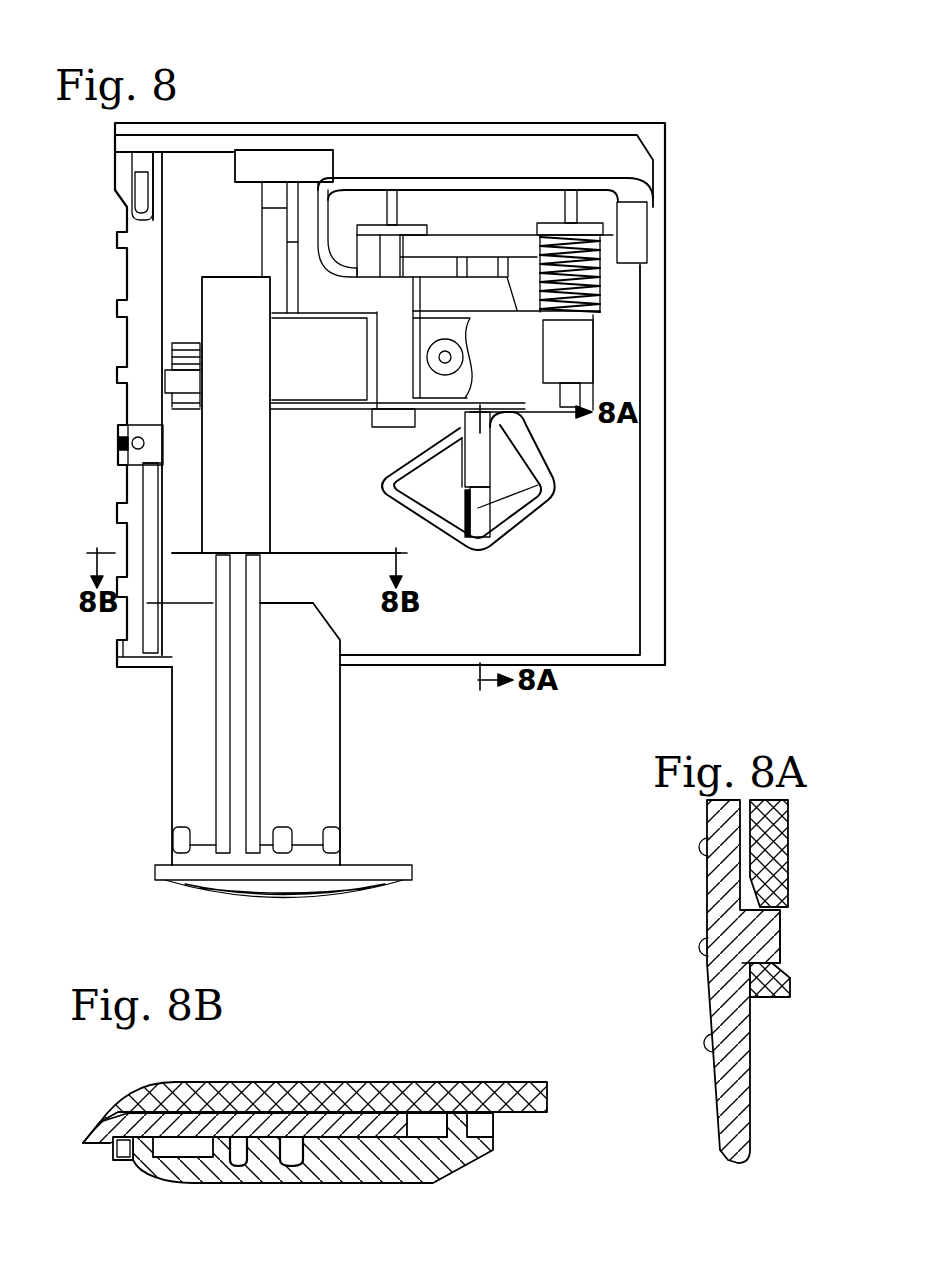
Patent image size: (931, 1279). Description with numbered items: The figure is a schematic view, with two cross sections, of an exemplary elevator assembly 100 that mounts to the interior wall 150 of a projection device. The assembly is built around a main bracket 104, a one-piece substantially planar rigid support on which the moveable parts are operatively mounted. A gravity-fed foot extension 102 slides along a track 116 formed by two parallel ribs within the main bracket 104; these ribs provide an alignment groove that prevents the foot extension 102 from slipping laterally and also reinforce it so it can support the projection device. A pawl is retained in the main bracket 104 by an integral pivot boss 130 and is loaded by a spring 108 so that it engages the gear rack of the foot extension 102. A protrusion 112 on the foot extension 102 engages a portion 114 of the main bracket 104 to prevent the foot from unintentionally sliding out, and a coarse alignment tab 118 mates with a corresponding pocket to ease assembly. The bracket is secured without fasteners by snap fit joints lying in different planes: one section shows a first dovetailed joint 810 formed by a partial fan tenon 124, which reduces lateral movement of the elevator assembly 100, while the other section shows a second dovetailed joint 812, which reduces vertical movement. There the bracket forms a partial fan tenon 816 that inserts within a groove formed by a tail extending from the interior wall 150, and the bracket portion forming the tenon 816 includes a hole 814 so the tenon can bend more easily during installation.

In FIG. 8, the elevator assembly 100 is at (699, 249).
In FIG. 8, the foot extension 102 is at (317, 747).
In FIG. 8B, the foot extension 102 is at (190, 1127).
In FIG. 8A, the main bracket 104 is at (712, 923).
In FIG. 8B, the main bracket 104 is at (407, 1183).
In FIG. 8, the spring 108 is at (598, 272).
In FIG. 8, the protrusion 112 is at (188, 355).
In FIG. 8, the portion of the main bracket 114 is at (178, 408).
In FIG. 8, the track 116 is at (252, 773).
In FIG. 8B, the track 116 is at (268, 1167).
In FIG. 8, the coarse alignment tab 118 is at (257, 188).
In FIG. 8, the partial fan tenon 124 is at (150, 497).
In FIG. 8B, the partial fan tenon 124 is at (147, 1130).
In FIG. 8, the pivot boss 130 is at (428, 358).
In FIG. 8A, the interior wall 150 is at (786, 876).
In FIG. 8B, the interior wall 150 is at (420, 1081).
In FIG. 8B, the first dovetailed joint 810 is at (127, 1130).
In FIG. 8A, the second dovetailed joint 812 is at (787, 955).
In FIG. 8, the hole 814 is at (513, 512).
In FIG. 8, the partial fan tenon 816 is at (478, 503).
In FIG. 8A, the partial fan tenon 816 is at (770, 933).